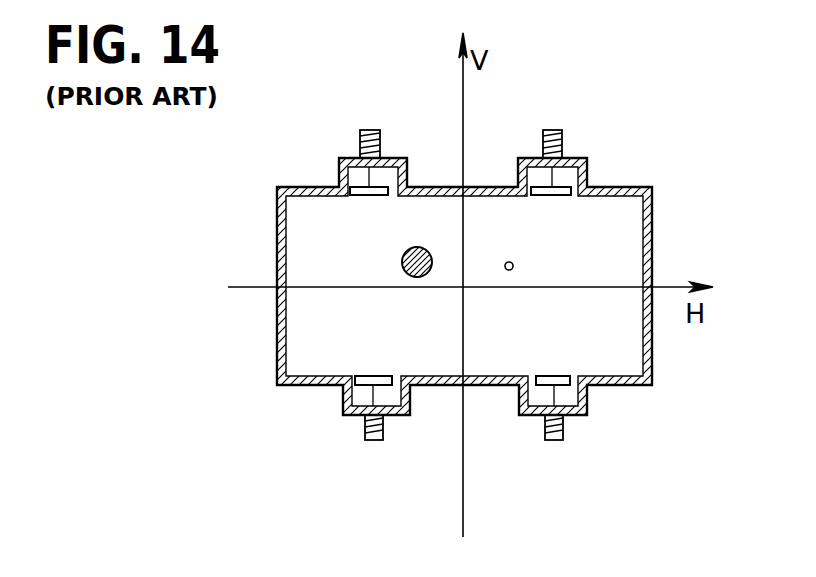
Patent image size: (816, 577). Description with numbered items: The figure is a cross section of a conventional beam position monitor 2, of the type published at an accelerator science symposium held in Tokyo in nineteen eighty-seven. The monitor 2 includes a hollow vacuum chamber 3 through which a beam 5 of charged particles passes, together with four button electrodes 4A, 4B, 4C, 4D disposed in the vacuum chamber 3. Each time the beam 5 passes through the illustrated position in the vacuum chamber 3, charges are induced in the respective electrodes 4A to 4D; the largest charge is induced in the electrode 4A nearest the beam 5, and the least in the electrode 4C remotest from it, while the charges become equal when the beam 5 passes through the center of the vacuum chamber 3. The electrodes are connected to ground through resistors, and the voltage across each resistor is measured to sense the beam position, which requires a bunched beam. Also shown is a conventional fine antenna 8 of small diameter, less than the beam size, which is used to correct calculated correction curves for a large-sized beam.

The beam position monitor 2 is at (660, 248).
The vacuum chamber 3 is at (655, 202).
The button electrode 4A is at (356, 186).
The button electrode 4B is at (568, 187).
The button electrode 4C is at (569, 388).
The button electrode 4D is at (347, 412).
The beam of charged particles 5 is at (416, 247).
The fine antenna 8 is at (507, 261).